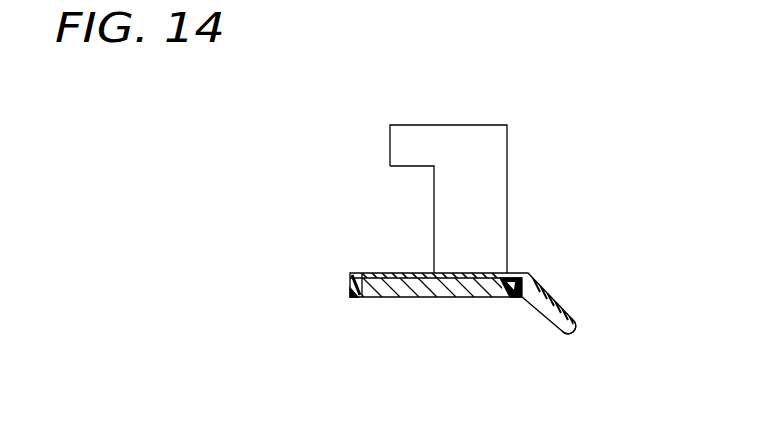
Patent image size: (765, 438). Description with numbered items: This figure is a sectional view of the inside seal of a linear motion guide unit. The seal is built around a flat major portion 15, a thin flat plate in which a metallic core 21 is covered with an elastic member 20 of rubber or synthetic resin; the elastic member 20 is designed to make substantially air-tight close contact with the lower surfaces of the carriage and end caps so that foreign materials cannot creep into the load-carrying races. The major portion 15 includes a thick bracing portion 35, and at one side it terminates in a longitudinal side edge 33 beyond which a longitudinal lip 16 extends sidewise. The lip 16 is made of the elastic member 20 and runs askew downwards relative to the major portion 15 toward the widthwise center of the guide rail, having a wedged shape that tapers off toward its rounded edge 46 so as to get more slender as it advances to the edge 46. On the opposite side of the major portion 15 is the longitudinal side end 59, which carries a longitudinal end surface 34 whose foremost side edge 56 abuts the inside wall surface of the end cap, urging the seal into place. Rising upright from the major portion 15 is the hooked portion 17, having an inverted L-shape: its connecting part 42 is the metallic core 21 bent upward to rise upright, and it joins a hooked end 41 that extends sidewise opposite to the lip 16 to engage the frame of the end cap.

The hooked portion 17 is at (380, 199).
The hooked end 41 is at (402, 143).
The connecting part 42 is at (445, 195).
The elastic member 20 is at (455, 309).
The foremost side edge 56 is at (350, 277).
The longitudinal end surface 34 is at (350, 287).
The longitudinal side end 59 is at (351, 292).
The thick bracing portion 35 is at (380, 297).
The major portion 15 is at (422, 297).
The metallic core 21 is at (457, 298).
The longitudinal side edge 33 is at (517, 298).
The longitudinal lip 16 is at (555, 322).
The edge 46 is at (575, 327).